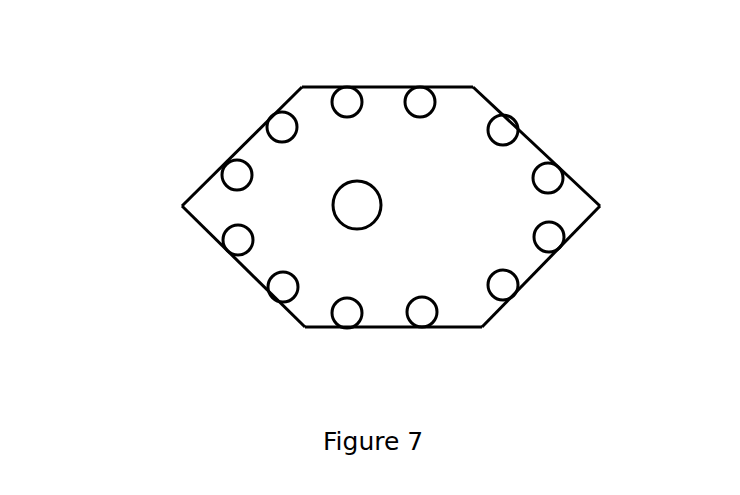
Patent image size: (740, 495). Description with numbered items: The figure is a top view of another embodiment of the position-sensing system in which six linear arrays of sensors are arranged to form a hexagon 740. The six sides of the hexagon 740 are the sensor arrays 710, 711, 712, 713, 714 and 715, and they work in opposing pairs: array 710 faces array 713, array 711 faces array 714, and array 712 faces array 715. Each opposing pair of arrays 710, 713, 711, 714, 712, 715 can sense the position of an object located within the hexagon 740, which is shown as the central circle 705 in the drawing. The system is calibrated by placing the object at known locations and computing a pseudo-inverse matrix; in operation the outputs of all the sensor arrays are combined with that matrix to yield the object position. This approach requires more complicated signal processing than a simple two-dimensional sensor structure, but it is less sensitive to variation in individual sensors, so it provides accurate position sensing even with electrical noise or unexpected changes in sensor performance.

The central port 705 is at (224, 140).
The linear array of sensors 710 is at (579, 266).
The linear array of sensors 711 is at (418, 354).
The linear array of sensors 712 is at (205, 267).
The linear array of sensors 713 is at (185, 144).
The linear array of sensors 714 is at (342, 55).
The linear array of sensors 715 is at (572, 146).
The hexagon 740 is at (413, 176).